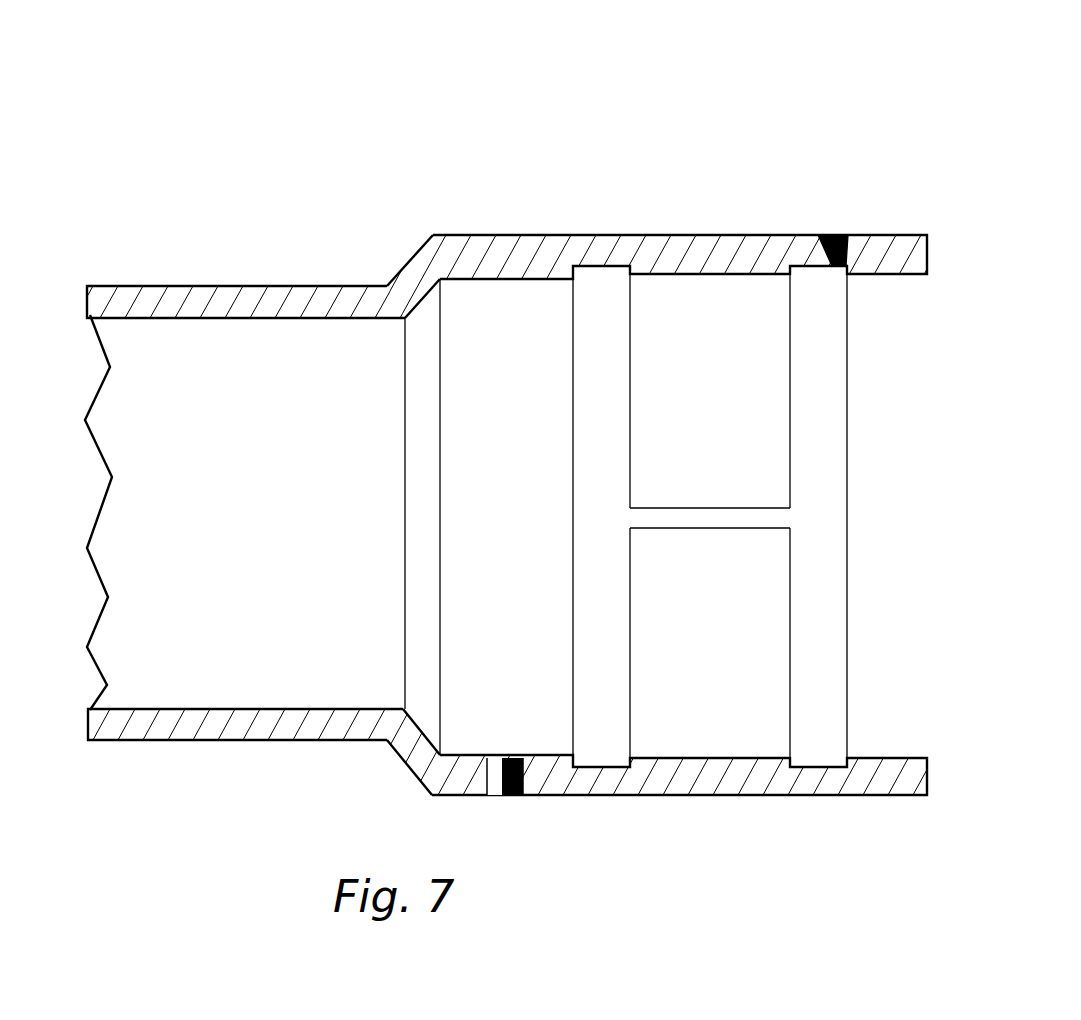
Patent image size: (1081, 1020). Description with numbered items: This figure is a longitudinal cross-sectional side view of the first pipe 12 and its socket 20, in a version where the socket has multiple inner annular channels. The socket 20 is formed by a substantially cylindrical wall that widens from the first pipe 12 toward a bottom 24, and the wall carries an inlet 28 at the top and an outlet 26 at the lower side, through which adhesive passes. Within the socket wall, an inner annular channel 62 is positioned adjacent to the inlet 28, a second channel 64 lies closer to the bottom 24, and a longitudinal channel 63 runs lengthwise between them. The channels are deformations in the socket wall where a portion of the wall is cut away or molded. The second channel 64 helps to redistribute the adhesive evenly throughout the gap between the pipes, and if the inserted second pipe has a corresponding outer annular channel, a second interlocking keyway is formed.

The first pipe 12 is at (280, 242).
The socket 20 is at (660, 248).
The bottom 24 is at (417, 755).
The outlet 26 is at (502, 783).
The inlet 28 is at (833, 237).
The inner annular channel 62 is at (812, 280).
The longitudinal channel 63 is at (728, 520).
The second channel 64 is at (598, 363).